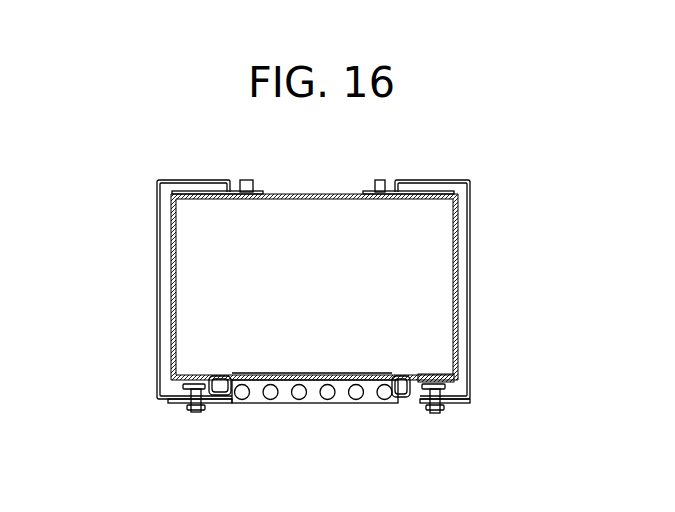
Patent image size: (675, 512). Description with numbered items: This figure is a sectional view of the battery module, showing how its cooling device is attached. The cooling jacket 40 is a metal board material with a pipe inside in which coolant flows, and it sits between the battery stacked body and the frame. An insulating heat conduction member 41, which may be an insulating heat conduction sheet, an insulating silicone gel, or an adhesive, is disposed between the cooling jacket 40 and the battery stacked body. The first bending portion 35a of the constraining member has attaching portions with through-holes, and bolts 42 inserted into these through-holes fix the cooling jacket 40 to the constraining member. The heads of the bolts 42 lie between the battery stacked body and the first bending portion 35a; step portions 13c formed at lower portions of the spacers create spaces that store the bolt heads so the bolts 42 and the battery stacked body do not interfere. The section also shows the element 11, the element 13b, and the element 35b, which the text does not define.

The display panel 11 is at (428, 258).
The fixing screw / bracket 13b is at (435, 371).
The step portion 13c is at (408, 400).
The first bending portion 35a is at (447, 402).
The bezel frame 35b is at (428, 185).
The cooling jacket 40 is at (262, 403).
The heat conduction member 41 is at (375, 372).
The bolt 42 is at (180, 389).